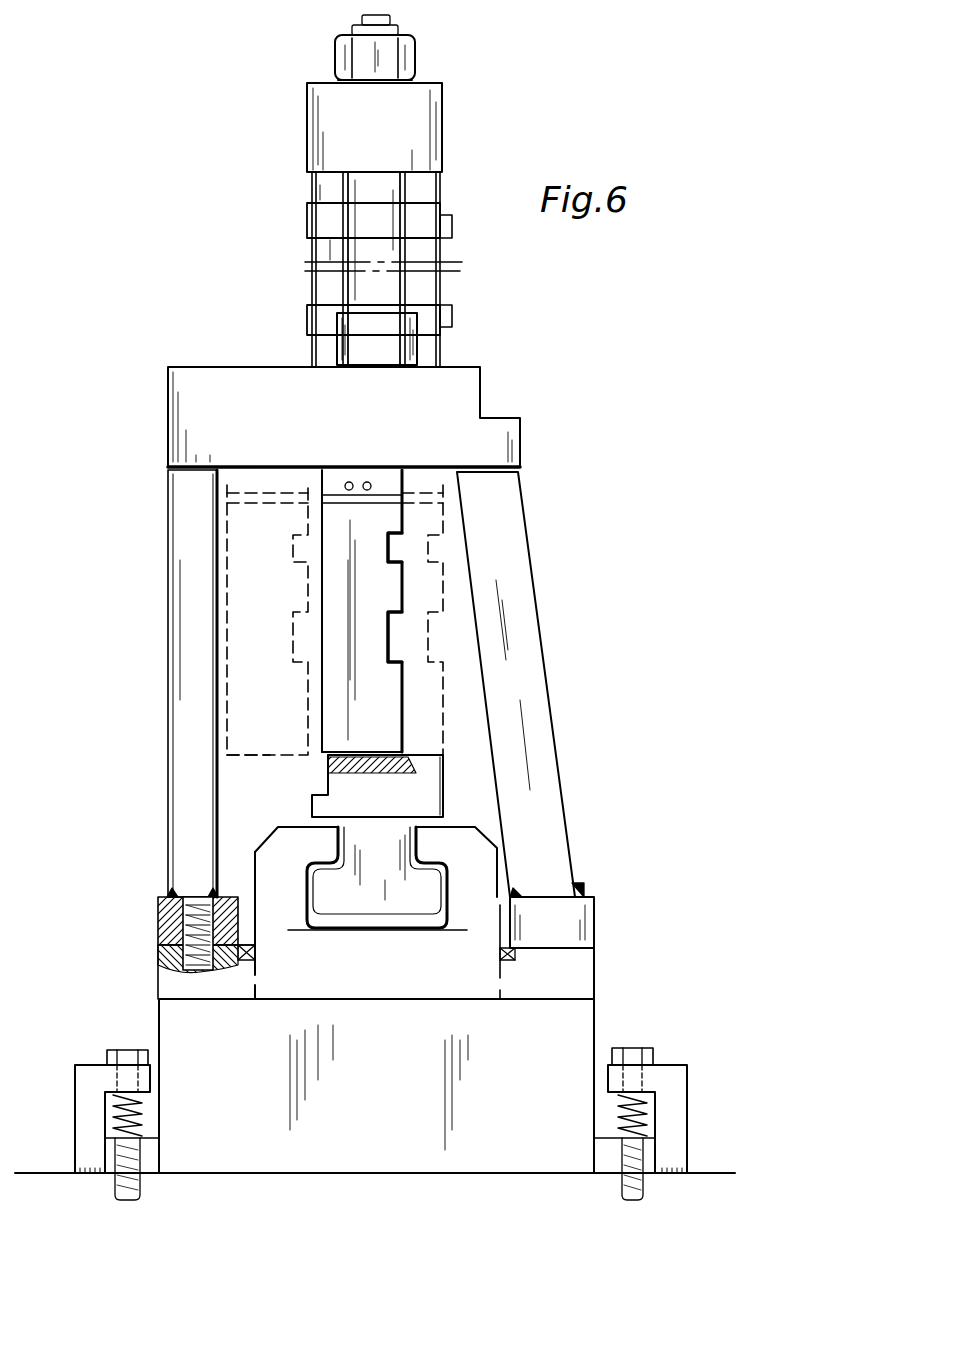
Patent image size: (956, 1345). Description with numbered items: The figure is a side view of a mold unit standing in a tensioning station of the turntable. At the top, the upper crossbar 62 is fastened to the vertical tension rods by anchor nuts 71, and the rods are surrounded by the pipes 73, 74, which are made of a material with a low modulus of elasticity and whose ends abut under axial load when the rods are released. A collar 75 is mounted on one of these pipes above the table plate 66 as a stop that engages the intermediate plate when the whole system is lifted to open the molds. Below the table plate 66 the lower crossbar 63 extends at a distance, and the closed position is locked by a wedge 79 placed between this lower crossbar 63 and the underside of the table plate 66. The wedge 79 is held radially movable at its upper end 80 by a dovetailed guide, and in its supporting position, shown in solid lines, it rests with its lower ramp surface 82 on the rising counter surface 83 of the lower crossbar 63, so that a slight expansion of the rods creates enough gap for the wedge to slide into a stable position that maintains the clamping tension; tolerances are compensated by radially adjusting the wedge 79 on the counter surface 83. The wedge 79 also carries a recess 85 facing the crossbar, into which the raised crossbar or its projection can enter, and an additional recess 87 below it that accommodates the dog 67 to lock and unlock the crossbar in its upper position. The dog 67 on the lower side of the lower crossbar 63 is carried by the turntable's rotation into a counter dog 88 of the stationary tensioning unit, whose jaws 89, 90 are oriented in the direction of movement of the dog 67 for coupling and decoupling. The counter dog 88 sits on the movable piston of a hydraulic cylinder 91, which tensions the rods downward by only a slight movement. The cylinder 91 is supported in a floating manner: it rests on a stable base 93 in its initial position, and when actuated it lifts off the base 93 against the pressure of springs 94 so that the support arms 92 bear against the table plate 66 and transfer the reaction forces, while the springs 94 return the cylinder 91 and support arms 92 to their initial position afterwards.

The anchor nut 71 is at (392, 51).
The upper crossbar 62 is at (397, 133).
The pipe 73 is at (370, 220).
The pipe 74 is at (376, 269).
The collar 75 is at (395, 332).
The table plate 66 is at (424, 400).
The upper end 80 is at (403, 477).
The recess 85 is at (398, 552).
The additional recess 87 is at (393, 638).
The wedge 79 is at (350, 660).
The lower ramp surface 82 is at (272, 753).
The lower crossbar 63 is at (357, 792).
The counter surface 83 is at (410, 765).
The jaw 89 is at (285, 853).
The jaw 90 is at (465, 853).
The counter dog 88 is at (470, 882).
The dog 67 is at (390, 905).
The hydraulic cylinder 91 is at (560, 1026).
The support arm 92 is at (192, 557).
The spring 94 is at (138, 1110).
The base 93 is at (550, 1173).